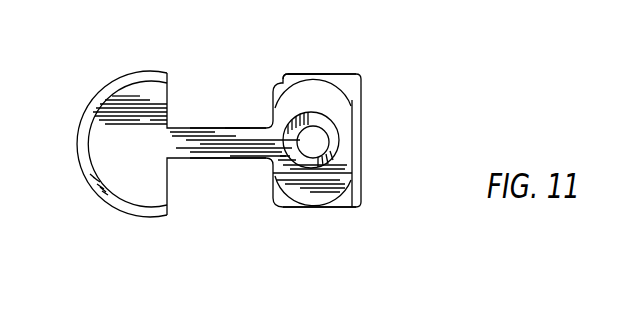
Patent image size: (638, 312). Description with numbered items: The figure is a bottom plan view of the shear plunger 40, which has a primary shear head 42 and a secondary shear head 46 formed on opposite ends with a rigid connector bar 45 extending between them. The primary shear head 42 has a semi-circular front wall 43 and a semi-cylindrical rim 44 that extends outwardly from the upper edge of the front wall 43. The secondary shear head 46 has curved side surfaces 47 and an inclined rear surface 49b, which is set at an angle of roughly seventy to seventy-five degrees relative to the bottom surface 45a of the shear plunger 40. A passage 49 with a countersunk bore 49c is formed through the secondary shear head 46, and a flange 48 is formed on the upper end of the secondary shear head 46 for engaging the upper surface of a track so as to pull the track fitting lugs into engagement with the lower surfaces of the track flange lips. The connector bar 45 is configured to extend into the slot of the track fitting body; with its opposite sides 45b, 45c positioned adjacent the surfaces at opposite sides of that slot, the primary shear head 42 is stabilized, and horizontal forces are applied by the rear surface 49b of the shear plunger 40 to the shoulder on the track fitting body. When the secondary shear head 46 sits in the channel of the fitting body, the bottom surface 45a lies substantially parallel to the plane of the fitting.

The shear plunger 40 is at (108, 76).
The primary shear head 42 is at (138, 76).
The semi-circular front wall 43 is at (105, 112).
The semi-cylindrical rim 44 is at (80, 137).
The connector bar 45 is at (217, 167).
The bottom surface 45a is at (193, 127).
The side of connector bar 45b is at (232, 127).
The side of connector bar 45c is at (243, 165).
The secondary shear head 46 is at (330, 95).
The curved side surfaces 47 is at (313, 76).
The flange 48 is at (297, 74).
The passage 49 is at (320, 146).
The rear surface 49b is at (347, 163).
The countersunk bore 49c is at (333, 122).